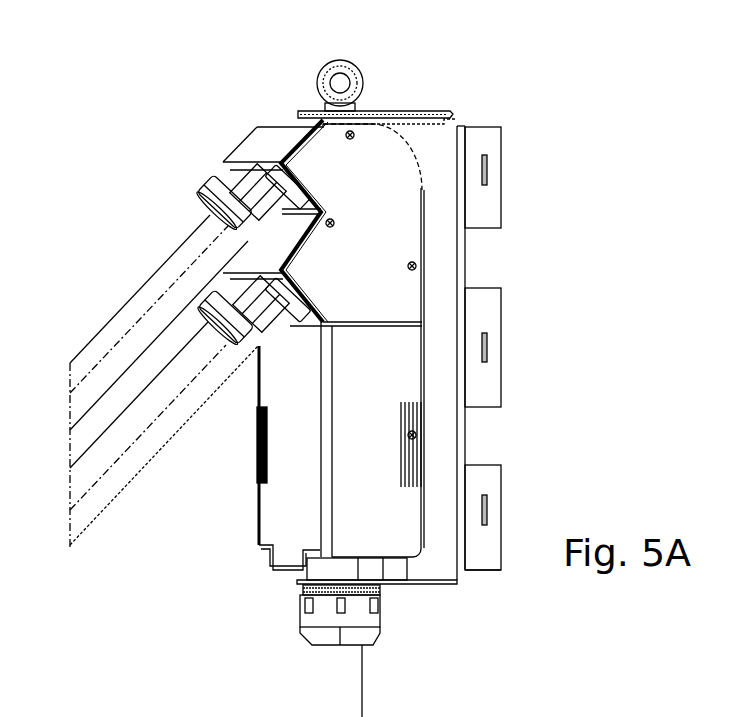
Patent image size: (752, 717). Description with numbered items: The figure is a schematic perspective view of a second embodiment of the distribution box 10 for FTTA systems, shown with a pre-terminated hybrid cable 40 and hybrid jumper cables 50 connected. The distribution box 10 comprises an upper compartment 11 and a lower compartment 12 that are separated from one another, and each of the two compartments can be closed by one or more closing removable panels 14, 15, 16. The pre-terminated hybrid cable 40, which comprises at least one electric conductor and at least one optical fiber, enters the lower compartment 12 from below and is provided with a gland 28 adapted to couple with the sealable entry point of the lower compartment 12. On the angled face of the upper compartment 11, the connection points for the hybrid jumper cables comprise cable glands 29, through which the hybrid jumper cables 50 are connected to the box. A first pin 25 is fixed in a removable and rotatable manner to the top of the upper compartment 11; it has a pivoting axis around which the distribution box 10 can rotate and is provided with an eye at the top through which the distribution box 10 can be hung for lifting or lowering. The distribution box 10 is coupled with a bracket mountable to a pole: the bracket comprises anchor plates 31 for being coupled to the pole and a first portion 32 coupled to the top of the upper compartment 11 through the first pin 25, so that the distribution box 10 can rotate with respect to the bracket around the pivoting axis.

The distribution box 10 is at (448, 60).
The upper compartment 11 is at (436, 272).
The lower compartment 12 is at (440, 440).
The closing removable panel 14 is at (397, 162).
The closing removable panel 15 is at (282, 527).
The closing removable panel 16 is at (403, 525).
The first pin 25 is at (327, 101).
The gland 28 is at (372, 618).
The cable glands 29 is at (268, 198).
The anchor plates 31 is at (490, 214).
The first portion 32 is at (436, 110).
The hybrid cable 40 is at (352, 695).
The hybrid jumper cables 50 is at (113, 338).